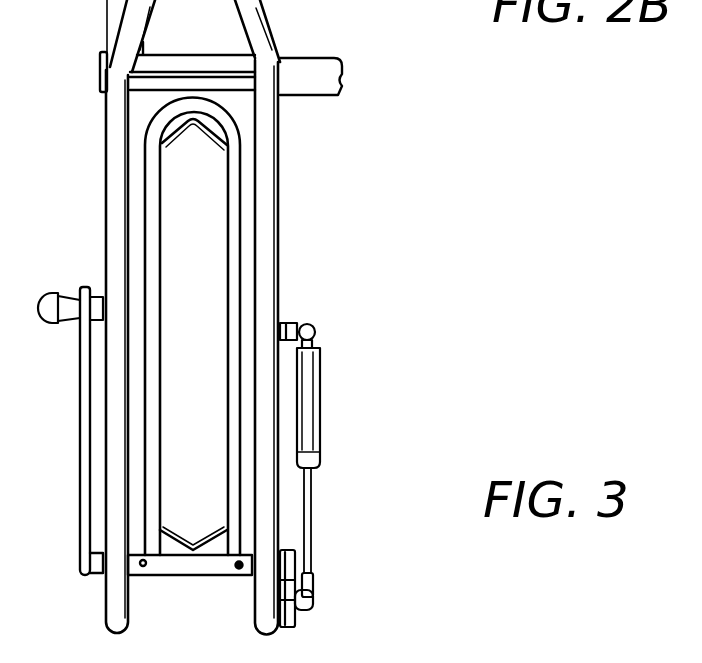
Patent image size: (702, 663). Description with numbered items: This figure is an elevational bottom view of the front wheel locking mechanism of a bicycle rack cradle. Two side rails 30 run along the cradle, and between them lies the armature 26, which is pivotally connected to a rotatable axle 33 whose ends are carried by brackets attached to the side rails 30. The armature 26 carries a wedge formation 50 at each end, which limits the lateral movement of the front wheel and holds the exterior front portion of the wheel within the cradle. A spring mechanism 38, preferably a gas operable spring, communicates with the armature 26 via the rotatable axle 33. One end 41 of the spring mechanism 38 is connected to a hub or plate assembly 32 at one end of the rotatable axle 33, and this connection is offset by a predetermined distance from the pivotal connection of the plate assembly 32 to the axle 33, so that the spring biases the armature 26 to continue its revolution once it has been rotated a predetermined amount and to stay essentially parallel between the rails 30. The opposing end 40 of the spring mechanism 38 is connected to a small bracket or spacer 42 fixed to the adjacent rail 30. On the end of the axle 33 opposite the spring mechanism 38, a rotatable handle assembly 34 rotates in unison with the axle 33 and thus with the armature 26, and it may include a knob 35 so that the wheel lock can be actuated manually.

The armature 26 is at (243, 210).
The side rail 30 is at (107, 162).
The plate assembly 32 is at (297, 620).
The rotatable axle 33 is at (181, 576).
The handle assembly 34 is at (80, 455).
The knob 35 is at (55, 293).
The spring mechanism 38 is at (316, 396).
The opposing end 40 is at (315, 329).
The end 41 is at (313, 600).
The spacer 42 is at (290, 322).
The wedge formation 50 is at (207, 147).